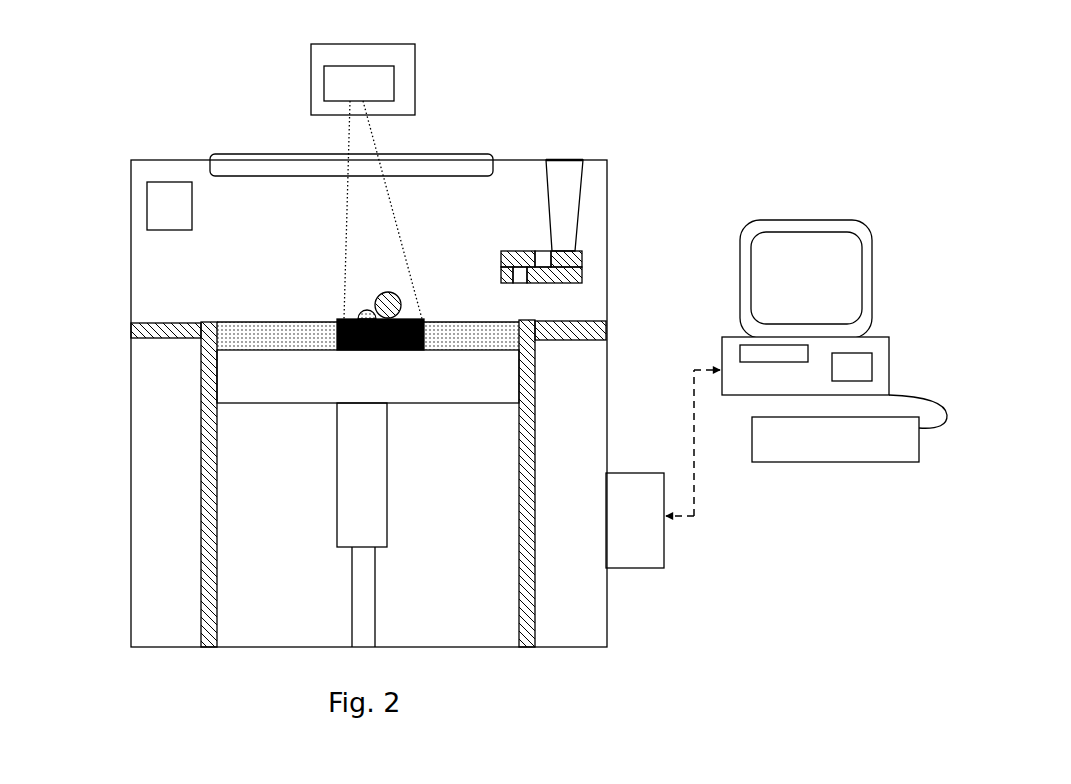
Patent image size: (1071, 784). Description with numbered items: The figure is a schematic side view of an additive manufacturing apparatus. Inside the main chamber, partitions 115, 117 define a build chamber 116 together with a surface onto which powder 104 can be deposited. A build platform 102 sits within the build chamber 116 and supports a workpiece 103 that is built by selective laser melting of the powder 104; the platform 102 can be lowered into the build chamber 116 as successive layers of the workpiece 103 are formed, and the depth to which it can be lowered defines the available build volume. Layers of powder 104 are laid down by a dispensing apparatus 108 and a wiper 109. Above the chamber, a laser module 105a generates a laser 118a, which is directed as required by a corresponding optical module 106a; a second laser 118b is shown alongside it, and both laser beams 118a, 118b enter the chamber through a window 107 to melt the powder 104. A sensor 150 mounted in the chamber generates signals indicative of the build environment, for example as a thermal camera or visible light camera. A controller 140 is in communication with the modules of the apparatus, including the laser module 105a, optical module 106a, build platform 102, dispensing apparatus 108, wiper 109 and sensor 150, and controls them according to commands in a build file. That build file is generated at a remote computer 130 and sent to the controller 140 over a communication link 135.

The build platform 102 is at (462, 395).
The workpiece 103 is at (335, 350).
The powder 104 is at (252, 343).
The laser module 105a is at (383, 80).
The optical module 106a is at (309, 92).
The window 107 is at (319, 160).
The dispensing apparatus 108 is at (510, 250).
The wiper 109 is at (395, 310).
The partition 115 is at (180, 317).
The build chamber 116 is at (490, 513).
The partition 117 is at (518, 595).
The laser 118a is at (348, 233).
The laser 118b is at (403, 255).
The remote computer 130 is at (753, 208).
The communication link 135 is at (697, 460).
The controller 140 is at (637, 547).
The sensor 150 is at (168, 200).